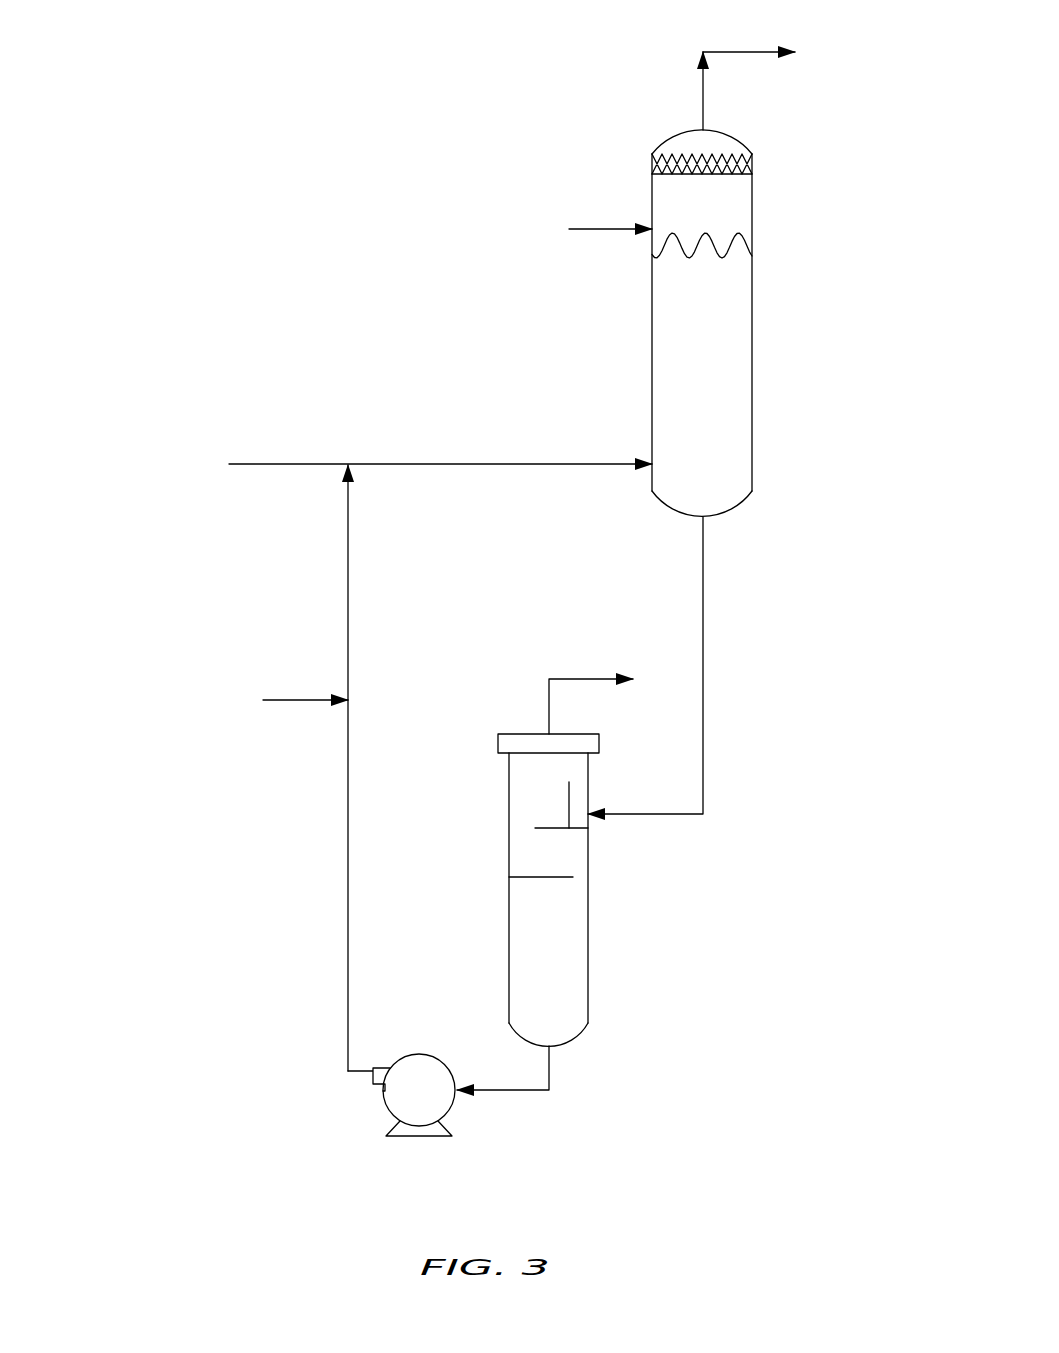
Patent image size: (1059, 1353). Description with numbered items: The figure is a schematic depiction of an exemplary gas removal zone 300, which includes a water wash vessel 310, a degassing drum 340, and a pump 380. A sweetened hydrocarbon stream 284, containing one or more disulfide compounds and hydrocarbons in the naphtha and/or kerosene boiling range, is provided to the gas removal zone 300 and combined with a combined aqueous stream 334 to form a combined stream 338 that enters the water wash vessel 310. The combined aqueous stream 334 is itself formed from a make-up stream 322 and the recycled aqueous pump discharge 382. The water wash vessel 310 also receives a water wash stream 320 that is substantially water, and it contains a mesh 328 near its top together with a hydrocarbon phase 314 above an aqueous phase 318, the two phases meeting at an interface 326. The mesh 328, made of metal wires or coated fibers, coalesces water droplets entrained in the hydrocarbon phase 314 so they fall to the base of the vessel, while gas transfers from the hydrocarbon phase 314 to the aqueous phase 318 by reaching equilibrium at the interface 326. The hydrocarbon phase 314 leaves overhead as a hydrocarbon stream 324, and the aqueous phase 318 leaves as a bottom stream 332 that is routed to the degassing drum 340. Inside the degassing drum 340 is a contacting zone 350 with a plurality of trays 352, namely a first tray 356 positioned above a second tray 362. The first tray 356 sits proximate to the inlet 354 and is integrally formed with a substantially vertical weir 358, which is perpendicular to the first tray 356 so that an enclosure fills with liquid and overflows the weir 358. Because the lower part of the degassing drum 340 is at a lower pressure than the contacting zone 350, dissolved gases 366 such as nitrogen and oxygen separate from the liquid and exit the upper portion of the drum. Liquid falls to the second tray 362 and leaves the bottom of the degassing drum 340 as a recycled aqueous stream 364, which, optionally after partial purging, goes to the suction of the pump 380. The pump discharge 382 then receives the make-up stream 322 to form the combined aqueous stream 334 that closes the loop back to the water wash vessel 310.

The gas removal zone 300 is at (214, 246).
The water wash vessel 310 is at (752, 212).
The hydrocarbon phase 314 is at (735, 189).
The aqueous phase 318 is at (740, 356).
The water wash stream 320 is at (612, 227).
The make-up stream 322 is at (287, 698).
The hydrocarbon stream 324 is at (748, 51).
The interface 326 is at (752, 248).
The mesh 328 is at (718, 152).
The bottom stream 332 is at (705, 672).
The combined aqueous stream 334 is at (349, 581).
The combined stream 338 is at (438, 462).
The sweetened hydrocarbon stream 284 is at (260, 462).
The degassing drum 340 is at (590, 945).
The contacting zone 350 is at (540, 810).
The plurality of trays 352 is at (449, 720).
The inlet 354 is at (590, 814).
The first tray 356 is at (575, 828).
The weir 358 is at (569, 790).
The second tray 362 is at (545, 880).
The recycled aqueous stream 364 is at (551, 1071).
The gases 366 is at (593, 677).
The pump 380 is at (420, 1137).
The pump discharge 382 is at (360, 1070).